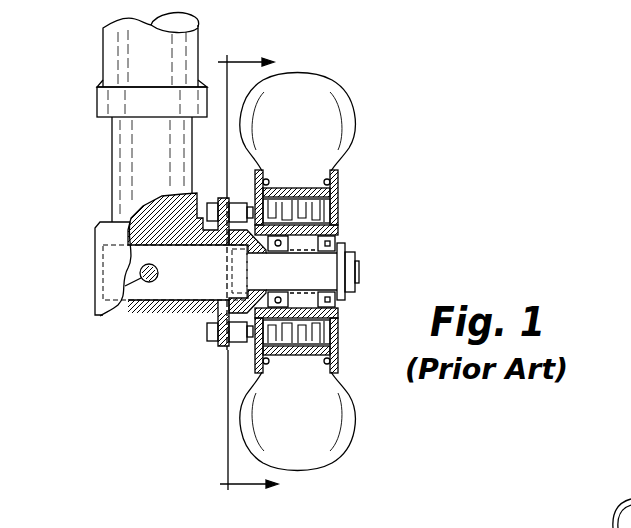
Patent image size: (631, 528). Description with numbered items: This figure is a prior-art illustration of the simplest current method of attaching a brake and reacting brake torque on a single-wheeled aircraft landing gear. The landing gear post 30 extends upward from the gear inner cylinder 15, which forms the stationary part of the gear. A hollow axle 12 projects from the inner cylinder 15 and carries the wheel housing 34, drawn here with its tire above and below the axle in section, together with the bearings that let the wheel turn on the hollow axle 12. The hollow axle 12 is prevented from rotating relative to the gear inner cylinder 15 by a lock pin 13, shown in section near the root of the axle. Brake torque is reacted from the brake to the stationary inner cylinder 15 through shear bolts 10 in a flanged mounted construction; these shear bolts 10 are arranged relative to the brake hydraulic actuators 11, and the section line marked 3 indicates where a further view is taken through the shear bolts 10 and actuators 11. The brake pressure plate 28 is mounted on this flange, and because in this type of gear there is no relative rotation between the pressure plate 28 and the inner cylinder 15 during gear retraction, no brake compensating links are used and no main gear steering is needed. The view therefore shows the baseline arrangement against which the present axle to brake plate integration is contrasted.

The section line 3- 3 is at (248, 276).
The landing gear post 30 is at (115, 63).
The inner cylinder 15 is at (104, 182).
The lock pin 13 is at (100, 316).
The shear bolts 10 is at (224, 258).
The brake pressure plate 28 is at (248, 230).
The brake hydraulic actuators 11 is at (230, 352).
The wheel housing 34 is at (348, 195).
The hollow axle 12 is at (318, 268).